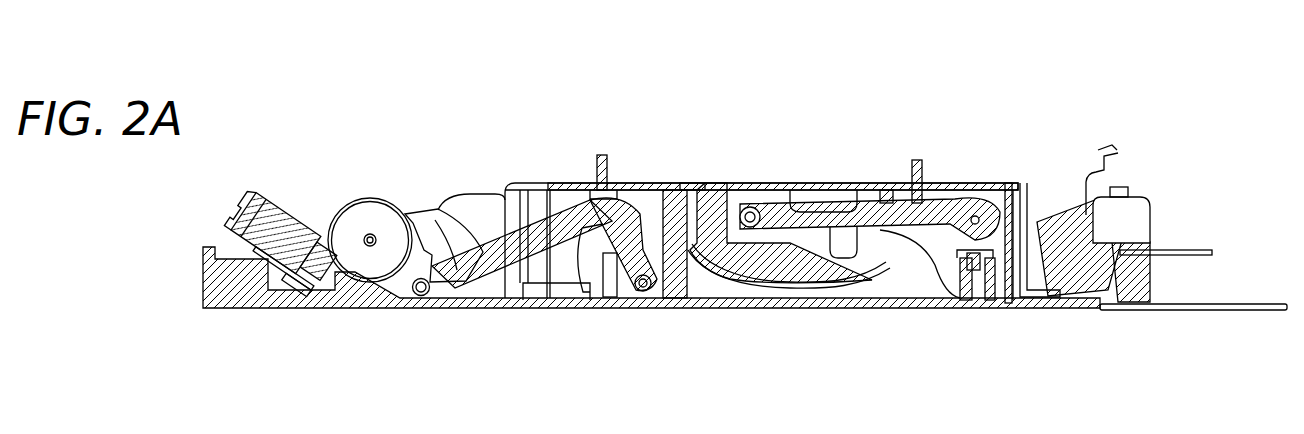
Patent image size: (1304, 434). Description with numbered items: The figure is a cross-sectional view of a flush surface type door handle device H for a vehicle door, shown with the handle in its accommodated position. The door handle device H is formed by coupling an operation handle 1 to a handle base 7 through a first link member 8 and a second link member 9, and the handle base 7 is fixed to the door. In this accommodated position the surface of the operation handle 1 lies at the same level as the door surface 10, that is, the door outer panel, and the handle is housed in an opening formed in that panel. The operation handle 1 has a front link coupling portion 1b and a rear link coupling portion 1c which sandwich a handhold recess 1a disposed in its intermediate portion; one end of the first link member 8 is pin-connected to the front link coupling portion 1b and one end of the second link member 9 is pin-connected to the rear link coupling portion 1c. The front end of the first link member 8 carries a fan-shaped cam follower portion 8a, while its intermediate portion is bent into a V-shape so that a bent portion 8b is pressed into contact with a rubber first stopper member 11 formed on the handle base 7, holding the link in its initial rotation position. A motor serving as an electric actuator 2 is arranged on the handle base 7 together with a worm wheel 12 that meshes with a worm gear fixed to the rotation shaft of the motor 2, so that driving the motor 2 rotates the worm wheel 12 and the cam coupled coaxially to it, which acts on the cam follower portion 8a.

The operation handle 1 is at (672, 305).
The handhold recess 1a is at (884, 270).
The front link coupling portion 1b is at (680, 184).
The rear link coupling portion 1c is at (988, 192).
The electric actuator 2 is at (283, 216).
The handle base 7 is at (253, 302).
The first link member 8 is at (503, 238).
The cam follower portion 8a is at (433, 226).
The bent portion 8b is at (588, 236).
The second link member 9 is at (862, 192).
The door surface 10 is at (1228, 308).
The first stopper member 11 is at (598, 175).
The worm wheel 12 is at (361, 216).
The door handle device H is at (1169, 188).